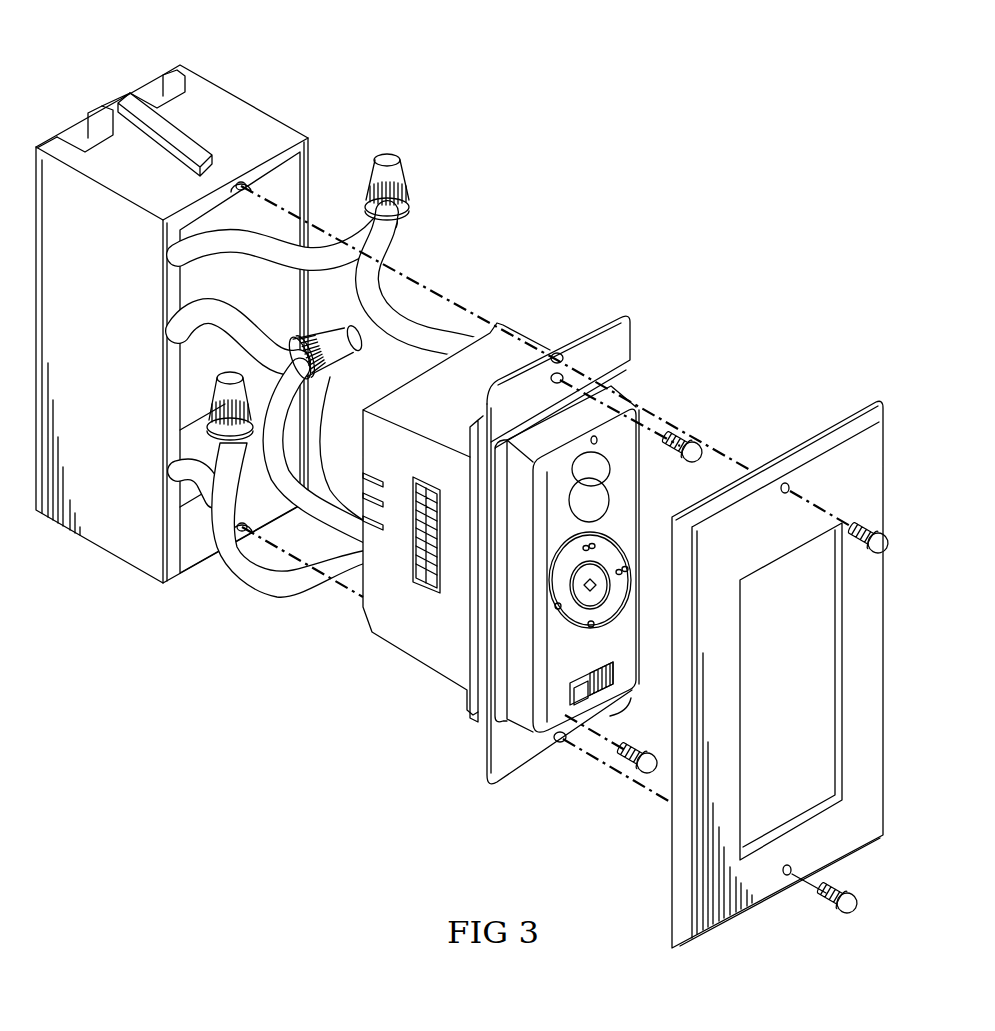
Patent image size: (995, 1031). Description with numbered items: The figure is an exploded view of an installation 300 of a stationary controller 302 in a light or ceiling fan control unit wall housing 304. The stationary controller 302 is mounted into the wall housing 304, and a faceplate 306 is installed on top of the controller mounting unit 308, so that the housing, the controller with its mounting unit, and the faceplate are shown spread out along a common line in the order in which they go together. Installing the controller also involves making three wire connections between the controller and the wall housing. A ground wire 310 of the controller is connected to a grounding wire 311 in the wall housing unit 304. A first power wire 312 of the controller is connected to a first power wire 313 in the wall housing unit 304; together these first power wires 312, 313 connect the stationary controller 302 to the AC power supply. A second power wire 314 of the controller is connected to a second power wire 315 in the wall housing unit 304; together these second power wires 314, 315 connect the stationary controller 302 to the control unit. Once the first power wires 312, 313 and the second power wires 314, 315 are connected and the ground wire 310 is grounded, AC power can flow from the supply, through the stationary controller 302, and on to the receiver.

The load control system 300 is at (634, 240).
The stationary controller 302 is at (623, 553).
The light or ceiling fan control unit wall housing 304 is at (178, 64).
The faceplate 306 is at (777, 455).
The controller mounting unit 308 is at (497, 784).
The ground wire 310 is at (403, 245).
The grounding wire 311 is at (345, 237).
The first power wire 312 is at (268, 599).
The first power wire 313 is at (176, 461).
The second power wire 314 is at (332, 500).
The second power wire 315 is at (235, 310).